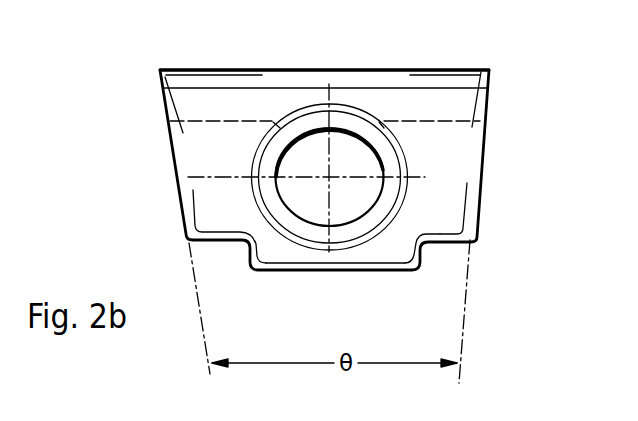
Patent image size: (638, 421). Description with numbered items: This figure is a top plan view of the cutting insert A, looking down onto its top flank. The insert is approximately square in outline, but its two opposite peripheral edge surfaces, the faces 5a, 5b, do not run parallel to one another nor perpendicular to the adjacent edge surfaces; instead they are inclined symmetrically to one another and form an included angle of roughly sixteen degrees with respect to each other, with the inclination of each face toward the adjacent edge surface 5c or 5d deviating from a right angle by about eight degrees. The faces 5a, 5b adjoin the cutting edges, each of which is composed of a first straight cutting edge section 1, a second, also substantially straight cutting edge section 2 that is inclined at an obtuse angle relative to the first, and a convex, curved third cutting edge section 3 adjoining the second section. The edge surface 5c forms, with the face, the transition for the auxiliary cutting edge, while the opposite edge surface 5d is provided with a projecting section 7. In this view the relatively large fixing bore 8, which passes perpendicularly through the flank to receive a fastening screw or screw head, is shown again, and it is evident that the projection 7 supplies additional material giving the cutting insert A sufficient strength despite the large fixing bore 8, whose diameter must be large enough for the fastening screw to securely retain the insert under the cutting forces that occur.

The first straight cutting edge section 1 is at (173, 157).
The second straight cutting edge section 2 is at (166, 110).
The third curved cutting edge section 3 is at (160, 72).
The peripheral edge surface (face) 5a is at (178, 205).
The peripheral edge surface (face) 5b is at (485, 140).
The peripheral edge surface 5c is at (432, 70).
The peripheral edge surface 5d is at (452, 245).
The projecting section 7 is at (325, 262).
The fixing bore 8 is at (356, 206).
The cutting insert A is at (383, 42).